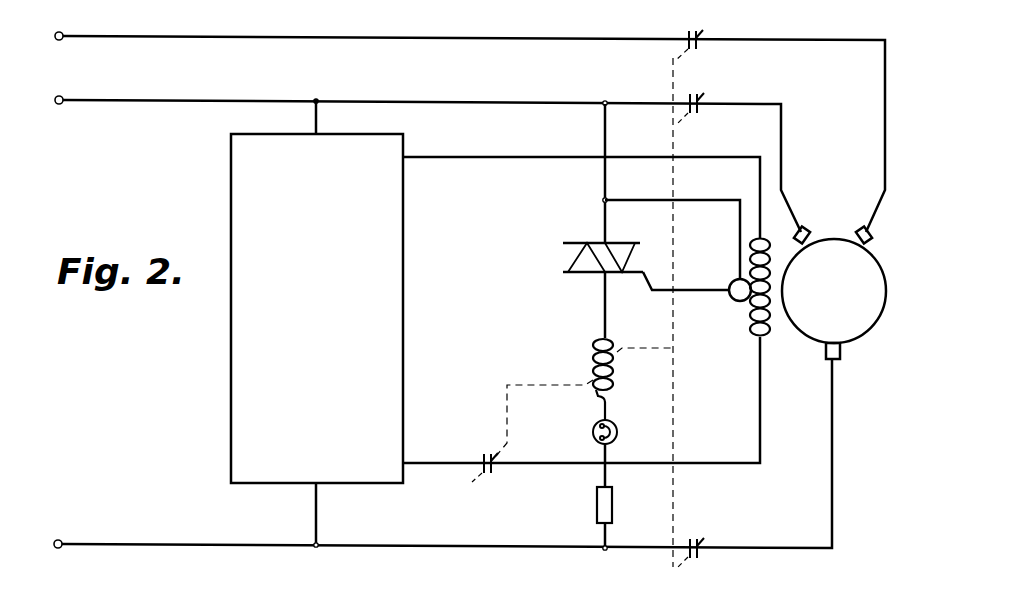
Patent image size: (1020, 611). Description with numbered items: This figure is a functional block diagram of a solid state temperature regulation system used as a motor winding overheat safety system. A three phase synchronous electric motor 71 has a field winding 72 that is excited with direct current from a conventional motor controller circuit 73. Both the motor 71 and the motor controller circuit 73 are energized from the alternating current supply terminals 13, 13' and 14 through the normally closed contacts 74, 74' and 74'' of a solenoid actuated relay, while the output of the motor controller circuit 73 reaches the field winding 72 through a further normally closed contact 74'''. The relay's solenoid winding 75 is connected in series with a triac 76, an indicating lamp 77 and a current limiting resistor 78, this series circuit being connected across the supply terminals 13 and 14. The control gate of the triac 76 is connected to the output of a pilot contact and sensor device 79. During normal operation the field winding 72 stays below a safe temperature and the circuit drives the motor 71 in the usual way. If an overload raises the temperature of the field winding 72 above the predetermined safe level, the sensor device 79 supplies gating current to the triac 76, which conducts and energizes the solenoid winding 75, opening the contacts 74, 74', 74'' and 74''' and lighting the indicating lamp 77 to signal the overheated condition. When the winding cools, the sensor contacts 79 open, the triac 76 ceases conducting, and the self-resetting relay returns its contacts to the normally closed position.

The alternating current supply terminal 13 is at (428, 153).
The alternating current supply terminal 13' is at (470, 123).
The alternating current supply terminal 14 is at (470, 548).
The electric motor 71 is at (830, 243).
The field winding 72 is at (771, 325).
The motor controller circuit 73 is at (390, 215).
The normally closed contact 74 is at (675, 38).
The normally closed contact 74' is at (708, 115).
The normally closed contact 74'' is at (710, 559).
The normally closed contact 74''' is at (508, 474).
The solenoid winding 75 is at (593, 346).
The triac 76 is at (576, 243).
The indicating lamp 77 is at (618, 426).
The current limiting resistor 78 is at (613, 503).
The pilot contact and sensor device 79 is at (737, 298).